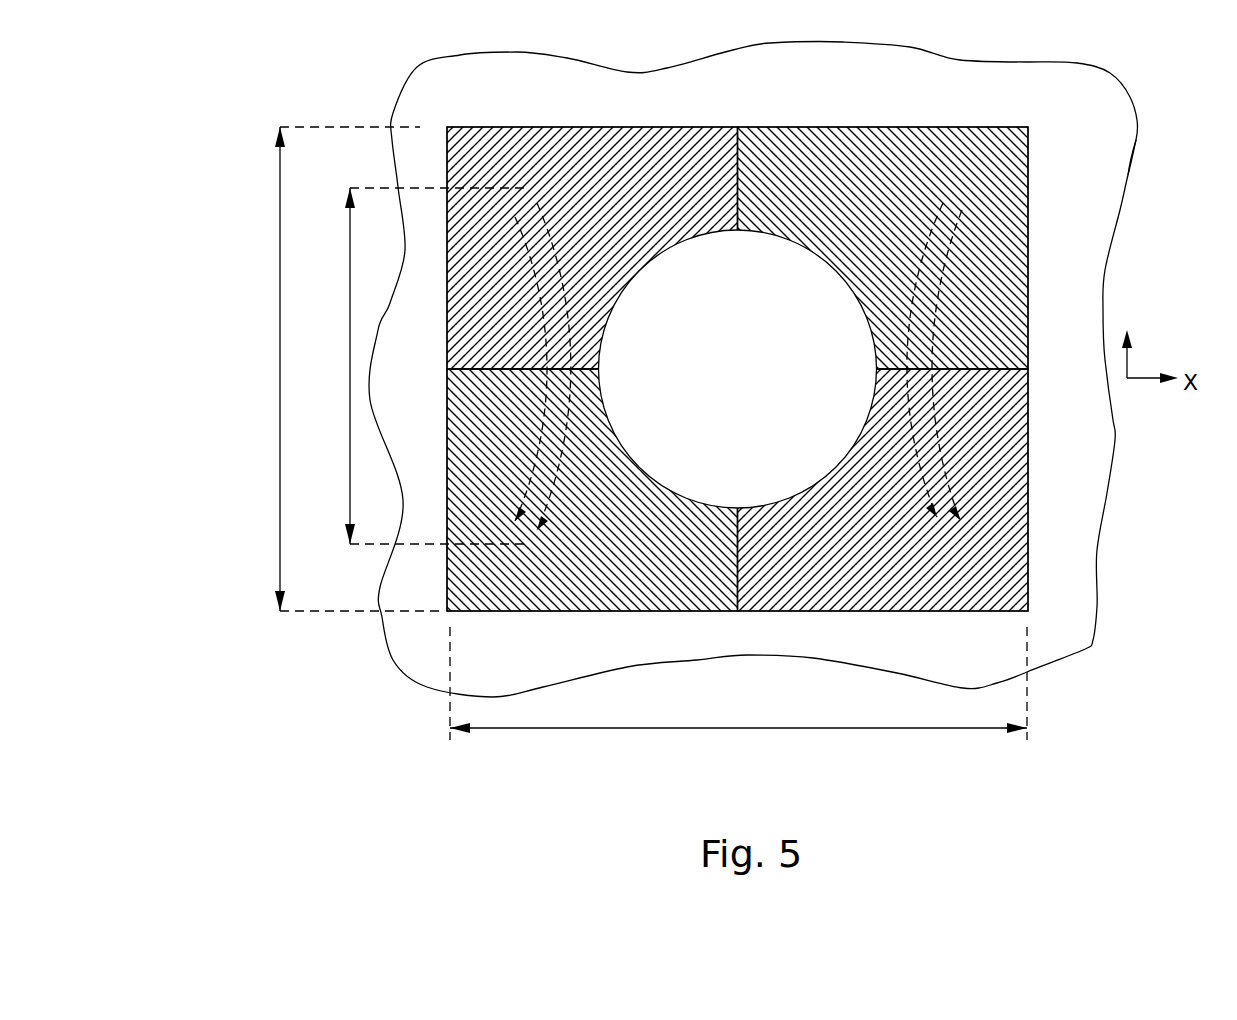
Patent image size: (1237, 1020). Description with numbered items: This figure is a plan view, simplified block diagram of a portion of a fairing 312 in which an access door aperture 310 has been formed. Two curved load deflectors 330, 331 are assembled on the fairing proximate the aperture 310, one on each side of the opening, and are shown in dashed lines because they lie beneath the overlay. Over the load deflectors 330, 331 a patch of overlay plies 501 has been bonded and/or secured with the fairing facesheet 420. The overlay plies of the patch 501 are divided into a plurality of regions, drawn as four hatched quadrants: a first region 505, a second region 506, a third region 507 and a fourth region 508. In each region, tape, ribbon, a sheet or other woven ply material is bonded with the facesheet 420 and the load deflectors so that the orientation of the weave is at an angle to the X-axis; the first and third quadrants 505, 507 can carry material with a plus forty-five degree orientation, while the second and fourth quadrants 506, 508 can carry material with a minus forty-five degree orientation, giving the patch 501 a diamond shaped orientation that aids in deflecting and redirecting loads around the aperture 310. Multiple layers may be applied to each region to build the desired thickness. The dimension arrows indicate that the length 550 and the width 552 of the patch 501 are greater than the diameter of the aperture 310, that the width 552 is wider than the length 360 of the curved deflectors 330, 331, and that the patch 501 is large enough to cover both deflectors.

The fairing facesheet 420 is at (1064, 87).
The fairing 312 is at (1137, 140).
The patch of overlay plies 501 is at (1040, 293).
The first region or quadrant 505 is at (633, 97).
The second region or quadrant 506 is at (1030, 220).
The third region or quadrant 507 is at (920, 597).
The fourth region or quadrant 508 is at (572, 597).
The access door aperture 310 is at (775, 287).
The curved load deflector 330 is at (537, 203).
The curved load deflector 331 is at (945, 195).
The length of the overlay patch 550 is at (280, 310).
The length of the curved deflectors 360 is at (350, 290).
The width of the overlay patch 552 is at (753, 732).